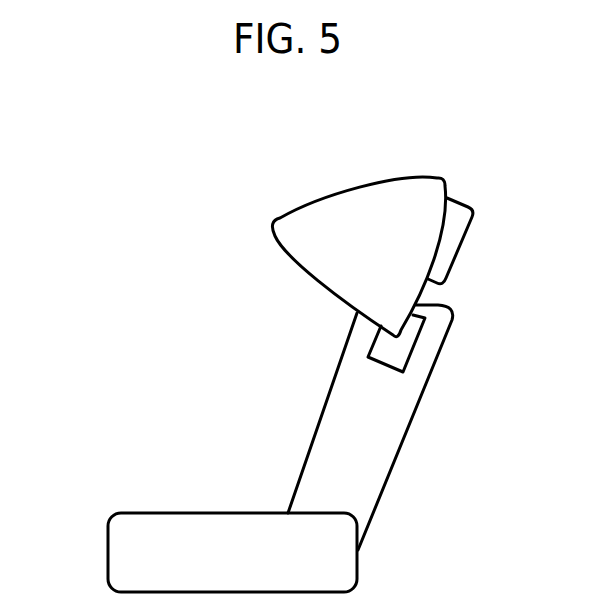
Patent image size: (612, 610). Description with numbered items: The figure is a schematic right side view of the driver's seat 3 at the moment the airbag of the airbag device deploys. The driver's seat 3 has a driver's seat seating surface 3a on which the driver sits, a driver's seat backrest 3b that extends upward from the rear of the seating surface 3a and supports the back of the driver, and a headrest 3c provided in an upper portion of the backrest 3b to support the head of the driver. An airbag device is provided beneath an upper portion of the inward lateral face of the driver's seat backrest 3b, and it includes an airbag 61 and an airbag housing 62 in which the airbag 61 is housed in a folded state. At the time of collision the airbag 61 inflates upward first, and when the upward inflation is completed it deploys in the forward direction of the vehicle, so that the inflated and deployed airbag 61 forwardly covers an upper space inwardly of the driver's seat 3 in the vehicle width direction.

The driver's seat 3 is at (178, 370).
The driver's seat seating surface 3a is at (128, 557).
The driver's seat backrest 3b is at (373, 455).
The headrest 3c is at (450, 243).
The airbag 61 is at (362, 212).
The airbag housing 62 is at (412, 353).